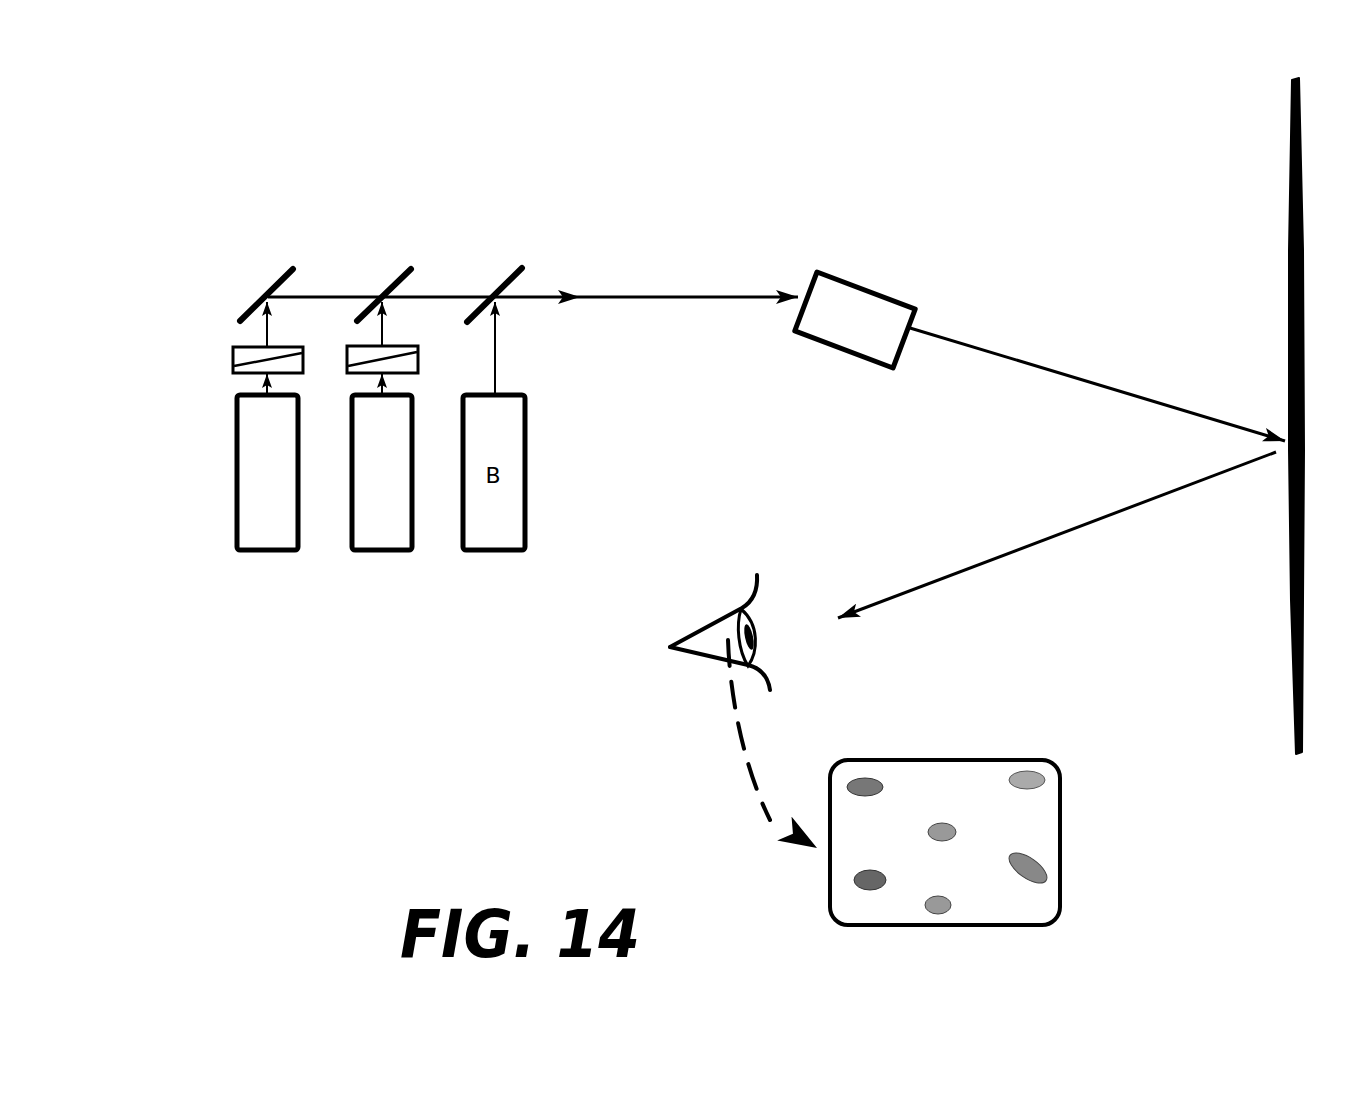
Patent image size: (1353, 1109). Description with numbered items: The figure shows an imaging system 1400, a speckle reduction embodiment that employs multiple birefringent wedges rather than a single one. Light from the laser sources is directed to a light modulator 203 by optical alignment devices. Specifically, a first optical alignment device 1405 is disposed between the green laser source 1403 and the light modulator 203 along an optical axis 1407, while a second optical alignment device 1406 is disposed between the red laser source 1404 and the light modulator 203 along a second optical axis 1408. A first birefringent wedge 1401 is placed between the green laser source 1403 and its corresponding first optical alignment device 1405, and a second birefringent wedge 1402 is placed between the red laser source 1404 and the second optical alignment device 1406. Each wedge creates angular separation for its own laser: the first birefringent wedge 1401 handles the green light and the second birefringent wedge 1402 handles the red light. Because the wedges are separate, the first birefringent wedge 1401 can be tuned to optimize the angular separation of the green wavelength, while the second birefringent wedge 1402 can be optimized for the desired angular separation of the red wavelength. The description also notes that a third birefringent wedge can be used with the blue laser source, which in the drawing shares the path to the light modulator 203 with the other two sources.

The imaging system 1400 is at (270, 697).
The first birefringent wedge 1401 is at (418, 353).
The second birefringent wedge 1402 is at (232, 353).
The green laser source 1403 is at (375, 513).
The red laser source 1404 is at (267, 520).
The first optical alignment device 1405 is at (407, 270).
The second optical alignment device 1406 is at (247, 309).
The optical axis 1407 is at (418, 380).
The second optical axis 1408 is at (274, 324).
The light modulator 203 is at (873, 287).